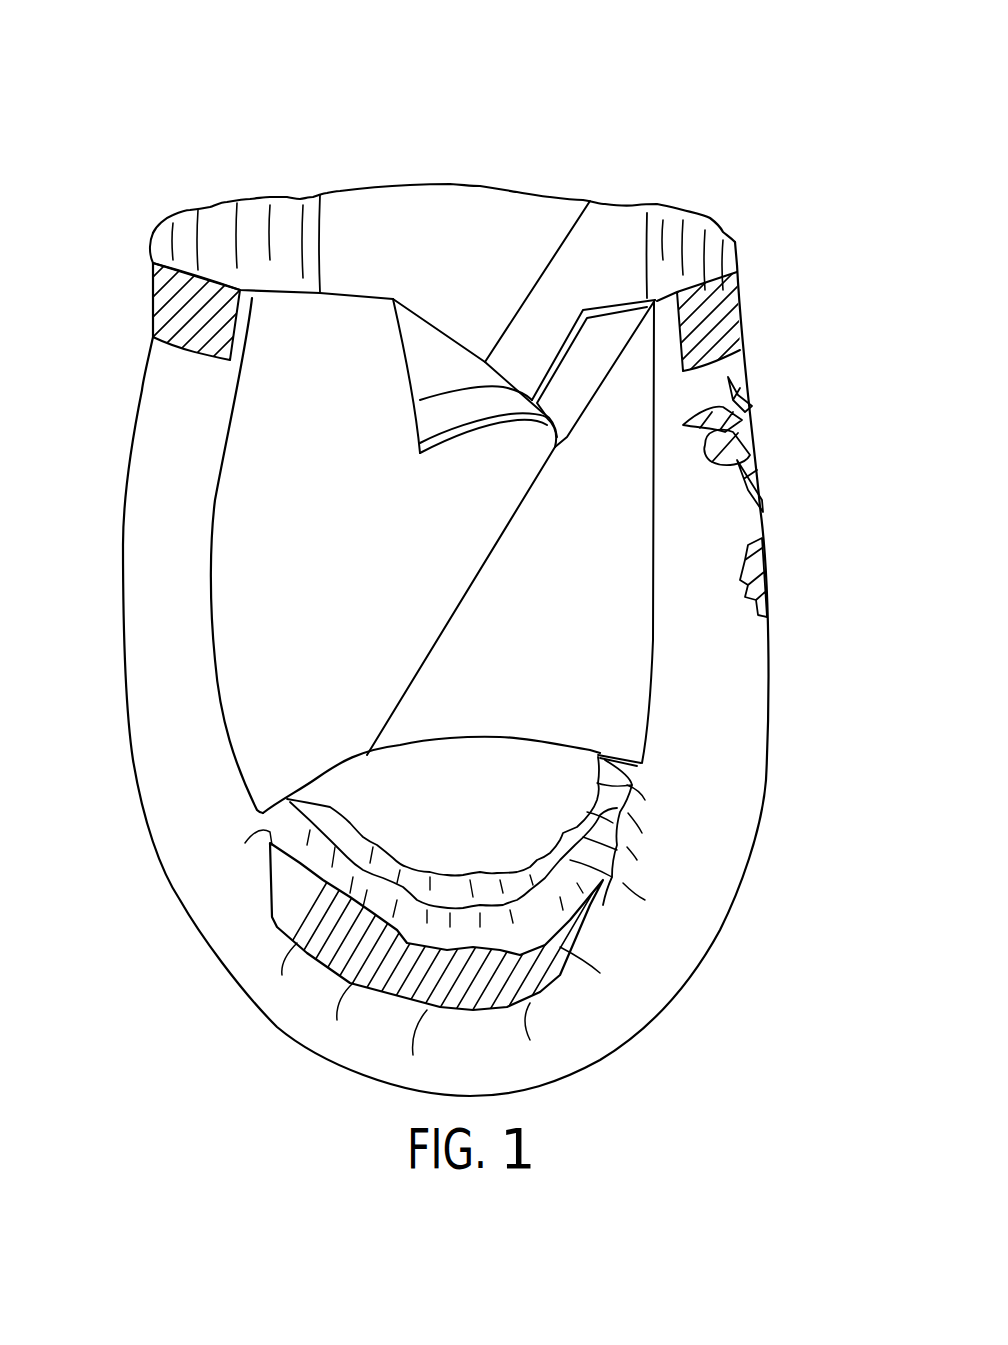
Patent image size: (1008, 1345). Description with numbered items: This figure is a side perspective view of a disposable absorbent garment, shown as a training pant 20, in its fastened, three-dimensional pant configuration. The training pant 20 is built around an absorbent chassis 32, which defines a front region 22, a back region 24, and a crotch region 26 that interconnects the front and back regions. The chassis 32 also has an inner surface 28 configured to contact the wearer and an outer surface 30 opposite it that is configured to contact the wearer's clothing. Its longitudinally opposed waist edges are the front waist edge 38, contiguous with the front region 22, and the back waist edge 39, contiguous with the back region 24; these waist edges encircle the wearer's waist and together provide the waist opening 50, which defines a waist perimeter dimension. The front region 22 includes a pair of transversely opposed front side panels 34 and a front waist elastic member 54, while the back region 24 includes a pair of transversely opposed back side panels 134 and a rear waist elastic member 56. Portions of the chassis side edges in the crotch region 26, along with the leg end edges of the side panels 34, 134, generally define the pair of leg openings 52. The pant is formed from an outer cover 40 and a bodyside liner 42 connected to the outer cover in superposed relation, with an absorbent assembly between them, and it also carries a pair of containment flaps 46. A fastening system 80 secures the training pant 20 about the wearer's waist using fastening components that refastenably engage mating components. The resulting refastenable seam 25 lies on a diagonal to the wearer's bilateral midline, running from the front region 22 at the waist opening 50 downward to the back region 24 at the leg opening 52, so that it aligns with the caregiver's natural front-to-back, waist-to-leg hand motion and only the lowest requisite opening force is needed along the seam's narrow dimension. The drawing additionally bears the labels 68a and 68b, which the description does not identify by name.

The training pant 20 is at (690, 90).
The waist opening 50 is at (520, 173).
The back side panels 134 is at (423, 205).
The front side panels 34 is at (640, 343).
The bodyside liner 42 is at (700, 220).
The front waist edge 38 is at (738, 240).
The back waist edge 39 is at (157, 227).
The front waist elastic member 54 is at (742, 310).
The rear waist elastic member 56 is at (153, 298).
The inner surface 28 is at (475, 293).
The folded elastic strip upper portion 68a is at (542, 362).
The folded elastic strip lower portion 68b is at (470, 437).
The fastening system 80 is at (570, 441).
The refastenable seam 25 is at (476, 578).
The outer surface 30 is at (740, 781).
The back region 24 is at (150, 552).
The front region 22 is at (750, 410).
The leg openings 52 is at (443, 845).
The containment flaps 46 is at (392, 978).
The absorbent chassis 32 is at (200, 902).
The crotch region 26 is at (293, 1013).
The outer cover 40 is at (729, 882).